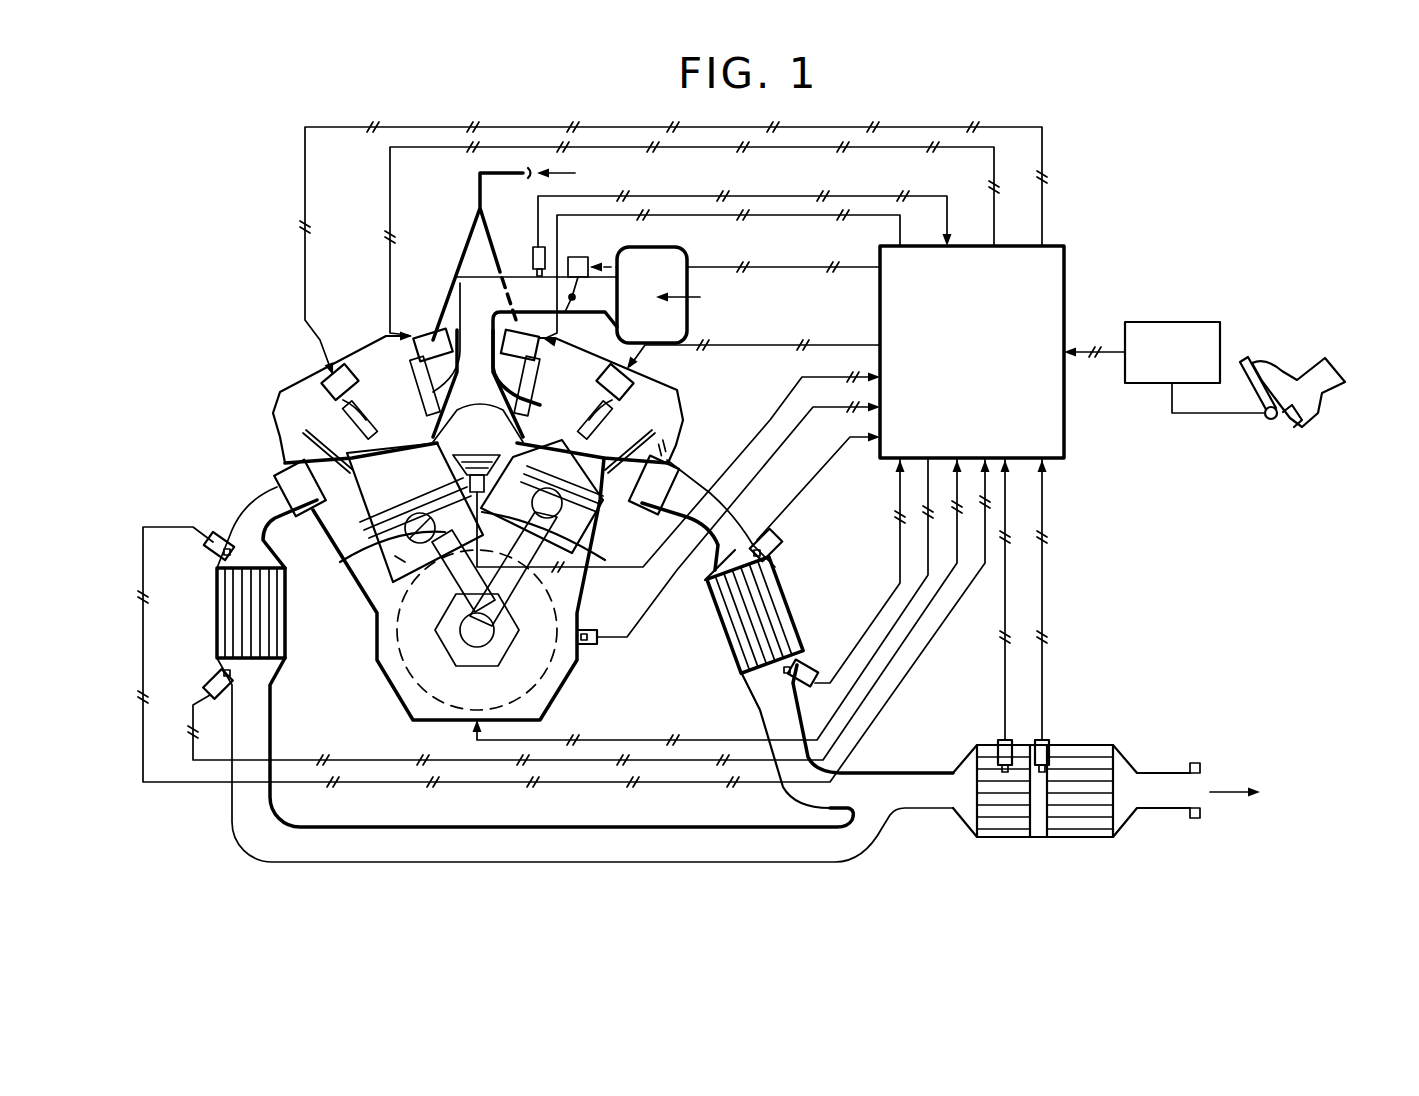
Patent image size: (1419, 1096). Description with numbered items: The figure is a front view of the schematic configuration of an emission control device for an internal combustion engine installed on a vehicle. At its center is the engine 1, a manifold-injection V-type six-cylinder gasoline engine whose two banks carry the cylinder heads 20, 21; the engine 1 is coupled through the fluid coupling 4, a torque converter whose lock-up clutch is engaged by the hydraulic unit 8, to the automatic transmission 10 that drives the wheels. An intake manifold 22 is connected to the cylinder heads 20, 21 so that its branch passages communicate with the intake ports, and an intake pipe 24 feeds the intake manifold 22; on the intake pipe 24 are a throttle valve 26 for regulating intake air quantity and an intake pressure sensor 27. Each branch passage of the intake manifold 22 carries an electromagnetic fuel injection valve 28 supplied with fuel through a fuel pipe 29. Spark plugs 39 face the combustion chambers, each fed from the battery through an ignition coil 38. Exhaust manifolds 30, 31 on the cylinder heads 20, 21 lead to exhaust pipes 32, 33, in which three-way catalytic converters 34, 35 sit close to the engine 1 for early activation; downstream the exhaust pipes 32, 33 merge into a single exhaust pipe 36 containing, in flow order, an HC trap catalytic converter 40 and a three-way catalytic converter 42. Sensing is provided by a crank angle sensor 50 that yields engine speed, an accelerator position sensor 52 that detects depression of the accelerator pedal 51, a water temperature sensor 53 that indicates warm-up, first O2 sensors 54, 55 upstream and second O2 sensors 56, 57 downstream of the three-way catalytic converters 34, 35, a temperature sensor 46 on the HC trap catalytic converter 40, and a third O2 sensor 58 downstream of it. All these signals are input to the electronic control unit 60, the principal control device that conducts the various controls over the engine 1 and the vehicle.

The engine body 1 is at (259, 262).
The fluid coupling 4 is at (476, 525).
The automatic transmission 10 is at (476, 525).
The hydraulic unit 8 is at (454, 630).
The cylinder head 20 is at (648, 400).
The cylinder head 21 is at (334, 373).
The intake manifold 22 is at (469, 352).
The intake pipe 24 is at (522, 309).
The throttle valve 26 is at (721, 278).
The intake pressure sensor 27 is at (727, 233).
The fuel injection valve 28 is at (610, 295).
The fuel pipe 29 is at (527, 251).
The exhaust manifold 30 is at (702, 513).
The exhaust manifold 31 is at (271, 504).
The exhaust pipe 32 is at (823, 736).
The exhaust pipe 33 is at (585, 760).
The three-way catalytic converter 34 is at (771, 615).
The three-way catalytic converter 35 is at (280, 613).
The exhaust pipe 36 is at (1137, 809).
The ignition coil 38 is at (478, 386).
The spark plug 39 is at (474, 411).
The HC trap catalytic converter 40 is at (1003, 822).
The three-way catalytic converter 42 is at (1080, 822).
The temperature sensor 46 is at (986, 725).
The crank angle sensor 50 is at (614, 653).
The accelerator pedal 51 is at (1292, 418).
The accelerator position sensor 52 is at (1194, 343).
The water temperature sensor 53 is at (354, 568).
The first O2 sensor 54 is at (788, 545).
The first O2 sensor 55 is at (211, 517).
The second O2 sensor 56 is at (805, 654).
The second O2 sensor 57 is at (205, 665).
The third O2 sensor 58 is at (1057, 723).
The electronic control unit 60 is at (642, 454).